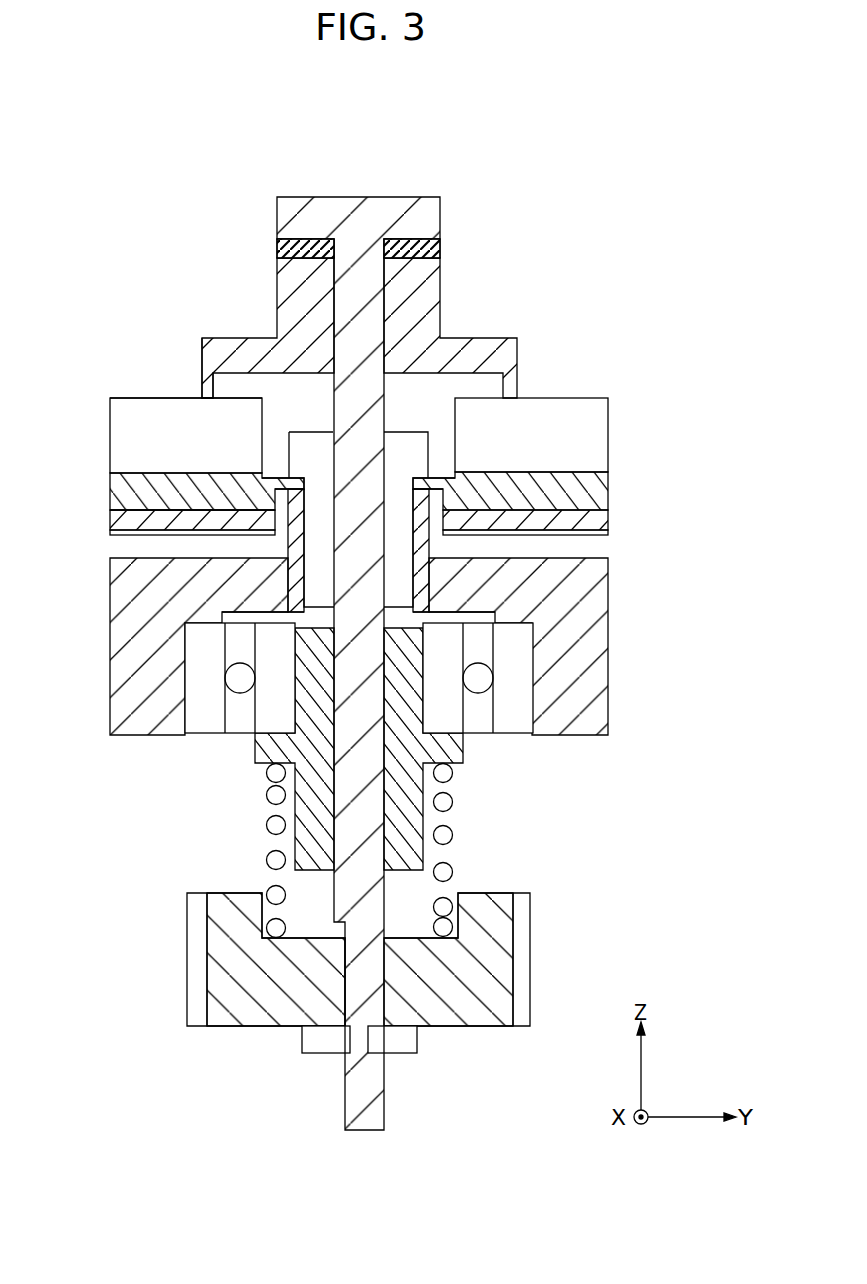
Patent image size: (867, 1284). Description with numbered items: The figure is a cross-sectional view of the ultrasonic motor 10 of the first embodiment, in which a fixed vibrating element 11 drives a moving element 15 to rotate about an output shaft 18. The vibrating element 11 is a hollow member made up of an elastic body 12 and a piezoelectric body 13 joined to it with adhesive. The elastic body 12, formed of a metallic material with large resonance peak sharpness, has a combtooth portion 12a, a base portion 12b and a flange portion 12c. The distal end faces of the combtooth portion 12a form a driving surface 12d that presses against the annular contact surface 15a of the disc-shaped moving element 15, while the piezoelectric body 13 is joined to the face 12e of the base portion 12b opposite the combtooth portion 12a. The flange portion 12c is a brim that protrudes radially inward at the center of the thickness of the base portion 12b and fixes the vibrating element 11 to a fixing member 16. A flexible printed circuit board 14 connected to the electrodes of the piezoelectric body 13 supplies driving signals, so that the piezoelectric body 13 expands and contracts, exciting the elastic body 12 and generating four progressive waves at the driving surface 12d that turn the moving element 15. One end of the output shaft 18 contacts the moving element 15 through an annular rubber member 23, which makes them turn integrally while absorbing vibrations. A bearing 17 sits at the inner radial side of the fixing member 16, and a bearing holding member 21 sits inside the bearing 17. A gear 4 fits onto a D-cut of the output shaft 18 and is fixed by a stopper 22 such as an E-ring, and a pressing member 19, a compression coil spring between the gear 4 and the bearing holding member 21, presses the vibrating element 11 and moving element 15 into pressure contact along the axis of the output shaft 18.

The ultrasonic motor 10 is at (622, 283).
The vibrating element 11 is at (748, 422).
The elastic body 12 is at (705, 378).
The combtooth portion 12a is at (586, 450).
The base portion 12b is at (586, 487).
The flange portion 12c is at (440, 482).
The driving surface 12d is at (126, 398).
The face opposite to the combtooth portion 12e is at (138, 512).
The piezoelectric body 13 is at (590, 522).
The flexible printed circuit board 14 is at (598, 536).
The moving element 15 is at (431, 306).
The contact surface 15a is at (208, 399).
The fixing member 16 is at (588, 614).
The bearing 17 is at (512, 717).
The output shaft 18 is at (341, 289).
The pressing member 19 is at (449, 833).
The bearing holding member 21 is at (292, 748).
The stopper 22 is at (402, 1044).
The rubber member 23 is at (282, 246).
The gear 4 is at (481, 1012).